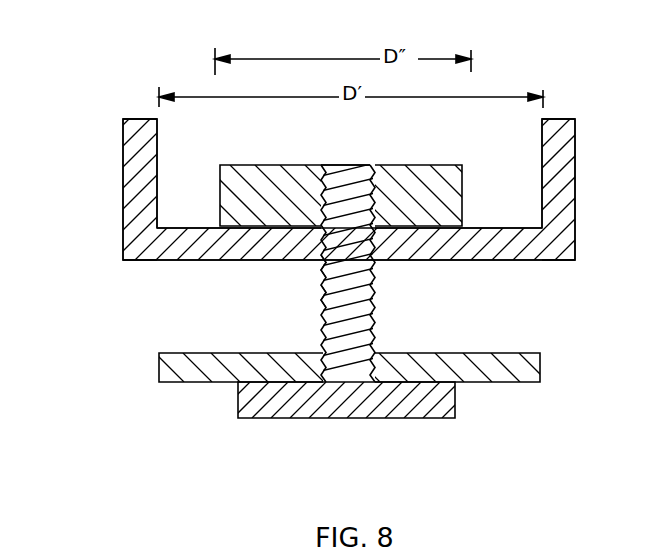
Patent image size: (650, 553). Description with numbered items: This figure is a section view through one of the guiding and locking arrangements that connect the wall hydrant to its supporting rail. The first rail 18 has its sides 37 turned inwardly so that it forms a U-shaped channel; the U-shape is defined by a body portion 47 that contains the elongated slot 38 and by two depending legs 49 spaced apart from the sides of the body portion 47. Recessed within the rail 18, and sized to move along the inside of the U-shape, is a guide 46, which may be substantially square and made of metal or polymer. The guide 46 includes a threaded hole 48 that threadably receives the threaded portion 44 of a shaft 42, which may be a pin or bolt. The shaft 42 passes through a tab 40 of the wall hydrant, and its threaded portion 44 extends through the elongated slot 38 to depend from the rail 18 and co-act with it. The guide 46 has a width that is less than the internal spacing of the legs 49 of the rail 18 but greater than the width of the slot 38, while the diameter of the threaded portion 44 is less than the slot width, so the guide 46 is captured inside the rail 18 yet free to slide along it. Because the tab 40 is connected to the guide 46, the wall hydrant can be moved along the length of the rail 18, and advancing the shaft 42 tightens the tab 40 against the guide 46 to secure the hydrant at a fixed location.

The first rail 18 is at (565, 202).
The sides 37 is at (130, 188).
The depending legs 49 is at (125, 124).
The body portion 47 is at (218, 254).
The guide 46 is at (410, 166).
The threaded hole 48 is at (330, 165).
The elongated slot 38 is at (321, 268).
The shaft 42 is at (325, 296).
The threaded portion 44 is at (376, 290).
The tab 40 is at (510, 363).